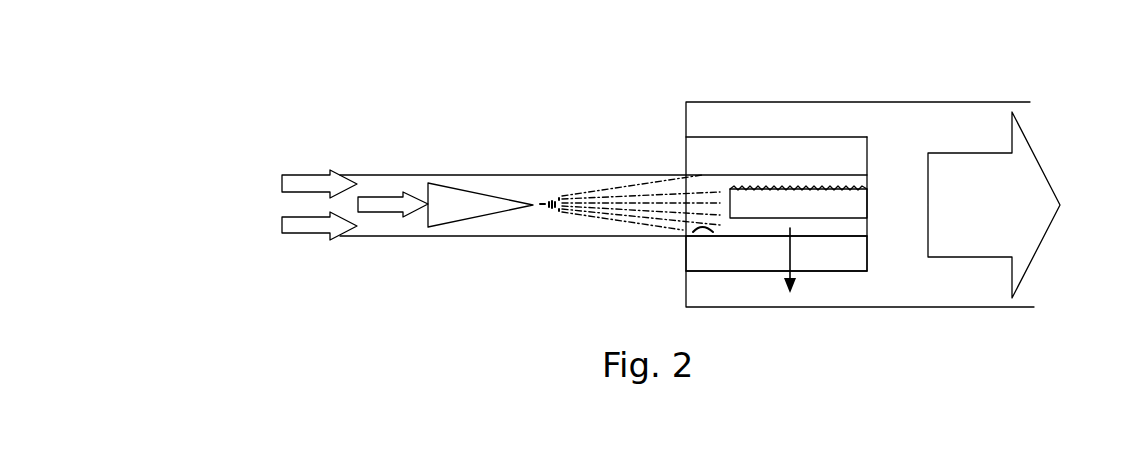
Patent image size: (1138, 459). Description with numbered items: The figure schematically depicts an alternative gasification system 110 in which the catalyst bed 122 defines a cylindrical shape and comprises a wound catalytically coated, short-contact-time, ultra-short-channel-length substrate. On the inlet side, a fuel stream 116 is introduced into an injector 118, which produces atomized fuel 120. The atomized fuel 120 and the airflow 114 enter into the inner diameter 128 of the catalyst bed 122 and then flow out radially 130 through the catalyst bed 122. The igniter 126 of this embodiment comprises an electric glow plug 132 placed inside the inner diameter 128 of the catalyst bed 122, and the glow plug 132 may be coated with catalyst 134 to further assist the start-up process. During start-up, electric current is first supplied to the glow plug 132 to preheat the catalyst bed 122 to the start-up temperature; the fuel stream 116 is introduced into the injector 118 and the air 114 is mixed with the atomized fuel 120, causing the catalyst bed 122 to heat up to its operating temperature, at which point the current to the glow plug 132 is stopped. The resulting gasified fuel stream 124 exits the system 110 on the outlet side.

The gasification system 110 is at (747, 52).
The airflow 114 is at (291, 186).
The fuel stream 116 is at (388, 203).
The injector 118 is at (470, 205).
The atomized fuel 120 is at (583, 210).
The catalyst bed 122 is at (797, 157).
The gasified fuel stream 124 is at (1022, 183).
The igniter 126 is at (785, 203).
The inner diameter 128 is at (693, 232).
The radial flow 130 is at (813, 267).
The electric glow plug 132 is at (840, 204).
The catalyst 134 is at (862, 188).